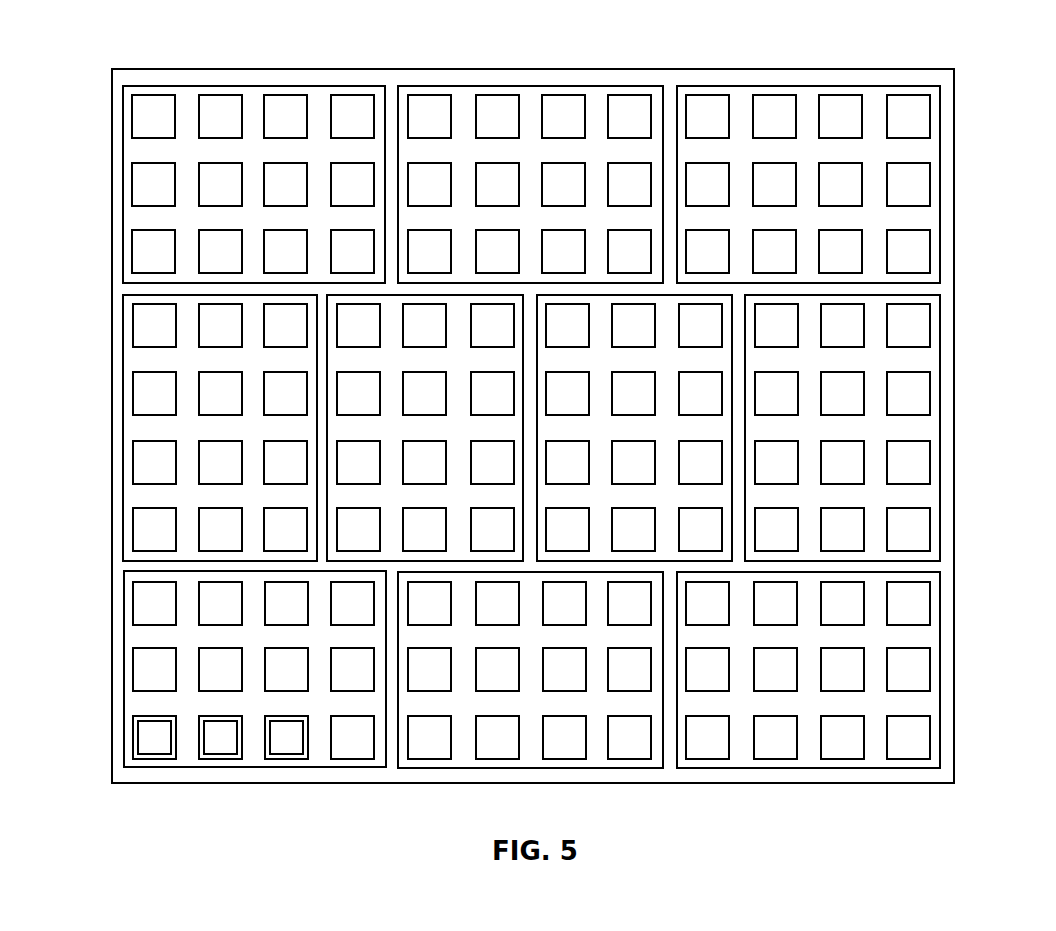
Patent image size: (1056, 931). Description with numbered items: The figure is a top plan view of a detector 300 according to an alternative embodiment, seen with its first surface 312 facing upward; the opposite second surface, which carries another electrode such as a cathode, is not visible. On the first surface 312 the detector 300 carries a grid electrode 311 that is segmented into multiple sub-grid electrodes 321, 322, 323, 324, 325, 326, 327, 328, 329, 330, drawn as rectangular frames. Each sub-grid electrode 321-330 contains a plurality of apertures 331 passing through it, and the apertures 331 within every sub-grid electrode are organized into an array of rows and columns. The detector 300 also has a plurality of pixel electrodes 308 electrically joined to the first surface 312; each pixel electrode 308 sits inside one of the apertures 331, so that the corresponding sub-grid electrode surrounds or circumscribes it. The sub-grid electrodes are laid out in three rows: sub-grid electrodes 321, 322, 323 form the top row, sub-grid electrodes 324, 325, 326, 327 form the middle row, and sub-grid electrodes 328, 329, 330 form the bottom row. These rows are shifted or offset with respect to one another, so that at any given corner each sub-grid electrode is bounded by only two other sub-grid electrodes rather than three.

The detector 300 is at (977, 106).
The first surface 312 is at (955, 182).
The grid electrode 311 is at (145, 777).
The sub-grid electrode 321 is at (133, 150).
The sub-grid electrode 322 is at (465, 97).
The sub-grid electrode 323 is at (808, 100).
The sub-grid electrode 324 is at (140, 430).
The sub-grid electrode 325 is at (446, 439).
The sub-grid electrode 326 is at (654, 439).
The sub-grid electrode 327 is at (942, 423).
The sub-grid electrode 328 is at (140, 703).
The sub-grid electrode 329 is at (463, 752).
The sub-grid electrode 330 is at (878, 758).
The apertures 331 is at (132, 482).
The pixel electrodes 308 is at (163, 752).